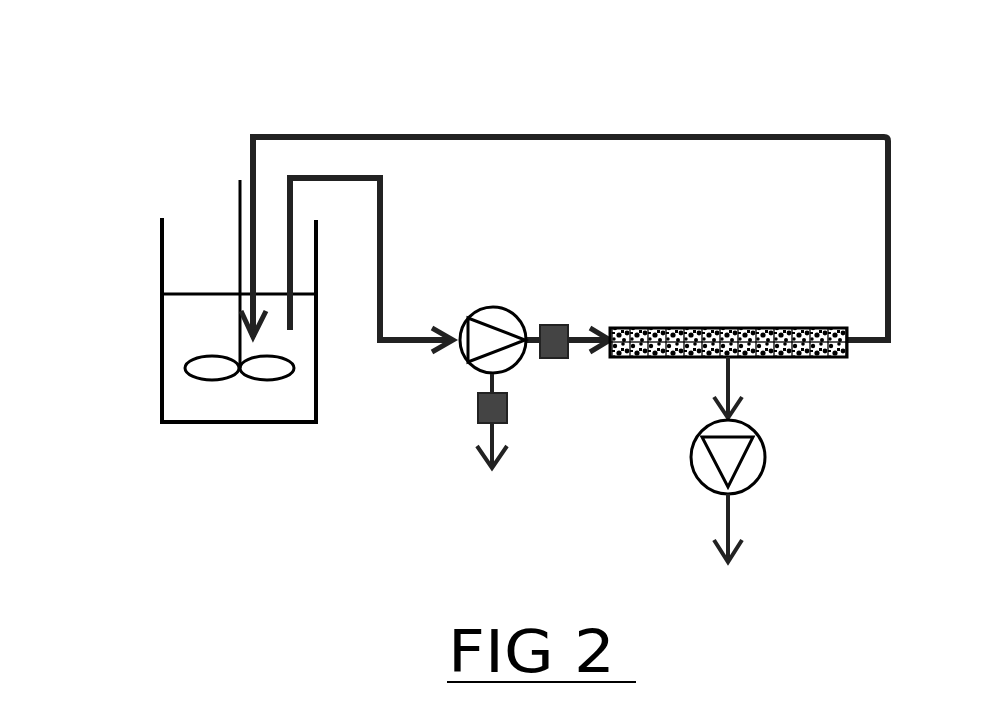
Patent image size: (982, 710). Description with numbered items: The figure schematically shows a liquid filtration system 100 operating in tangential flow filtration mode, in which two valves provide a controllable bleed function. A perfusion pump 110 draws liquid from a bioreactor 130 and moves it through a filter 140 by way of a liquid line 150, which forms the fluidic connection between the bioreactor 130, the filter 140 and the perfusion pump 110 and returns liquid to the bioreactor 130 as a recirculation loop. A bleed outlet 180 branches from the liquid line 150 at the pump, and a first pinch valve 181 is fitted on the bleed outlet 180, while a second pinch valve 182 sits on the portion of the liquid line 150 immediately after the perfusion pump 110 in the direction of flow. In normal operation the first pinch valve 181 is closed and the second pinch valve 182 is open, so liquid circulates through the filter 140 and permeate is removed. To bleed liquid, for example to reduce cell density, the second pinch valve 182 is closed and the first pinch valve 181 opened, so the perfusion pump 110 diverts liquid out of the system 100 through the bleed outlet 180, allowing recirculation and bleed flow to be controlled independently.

The liquid filtration system 100 is at (166, 60).
The bioreactor 130 is at (175, 317).
The liquid line 150 is at (458, 142).
The perfusion pump 110 is at (483, 300).
The second pinch valve 182 is at (553, 323).
The filter 140 is at (667, 335).
The bleed outlet 180 is at (475, 383).
The first pinch valve 181 is at (510, 408).